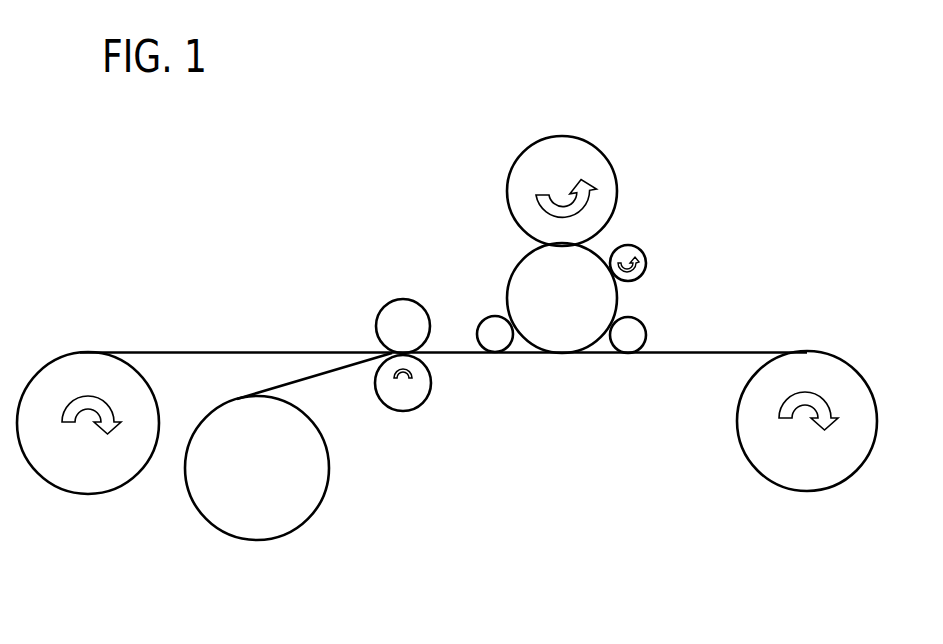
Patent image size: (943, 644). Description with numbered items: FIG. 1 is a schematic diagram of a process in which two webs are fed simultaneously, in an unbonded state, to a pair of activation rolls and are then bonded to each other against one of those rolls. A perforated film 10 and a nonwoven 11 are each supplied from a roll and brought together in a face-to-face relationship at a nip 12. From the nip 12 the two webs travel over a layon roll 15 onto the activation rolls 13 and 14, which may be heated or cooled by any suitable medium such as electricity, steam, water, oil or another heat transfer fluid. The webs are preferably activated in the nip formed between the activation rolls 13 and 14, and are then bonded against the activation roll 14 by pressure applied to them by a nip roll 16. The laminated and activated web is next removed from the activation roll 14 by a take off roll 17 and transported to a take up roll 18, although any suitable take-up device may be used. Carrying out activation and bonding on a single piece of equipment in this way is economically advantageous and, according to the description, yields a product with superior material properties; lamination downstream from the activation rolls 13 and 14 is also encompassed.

The perforated film 10 is at (182, 351).
The nonwoven 11 is at (311, 378).
The nip 12 is at (382, 341).
The activation roll 13 is at (503, 152).
The activation roll 14 is at (504, 275).
The layon roll 15 is at (516, 354).
The nip roll 16 is at (647, 256).
The take off roll 17 is at (647, 326).
The take up roll 18 is at (735, 469).